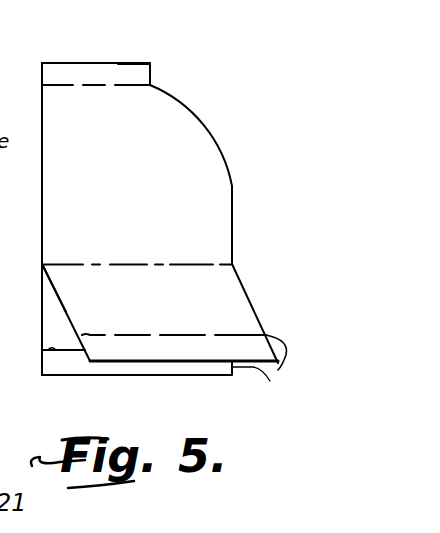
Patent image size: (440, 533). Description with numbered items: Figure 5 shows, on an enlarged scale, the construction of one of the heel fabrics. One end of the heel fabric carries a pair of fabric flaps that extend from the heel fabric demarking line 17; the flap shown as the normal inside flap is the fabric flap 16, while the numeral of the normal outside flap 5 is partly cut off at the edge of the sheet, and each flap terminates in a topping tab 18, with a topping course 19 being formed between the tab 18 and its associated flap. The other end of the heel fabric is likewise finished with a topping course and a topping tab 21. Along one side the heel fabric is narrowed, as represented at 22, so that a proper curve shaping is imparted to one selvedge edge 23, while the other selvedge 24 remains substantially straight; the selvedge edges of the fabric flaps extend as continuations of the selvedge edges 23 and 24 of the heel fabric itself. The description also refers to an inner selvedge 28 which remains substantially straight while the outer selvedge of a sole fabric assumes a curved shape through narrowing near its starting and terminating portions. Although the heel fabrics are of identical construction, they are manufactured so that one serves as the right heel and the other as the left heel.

The container body 5 is at (50, 325).
The fabric flap 16 is at (240, 309).
The heel fabric demarking line 17 is at (110, 264).
The topping tab 18 is at (137, 354).
The topping course 19 is at (82, 348).
The topping tab 21 is at (138, 77).
The narrowing 22 is at (198, 150).
The selvedge edge 23 is at (231, 180).
The selvedge 24 is at (42, 233).
The inner selvedge 28 is at (107, 85).